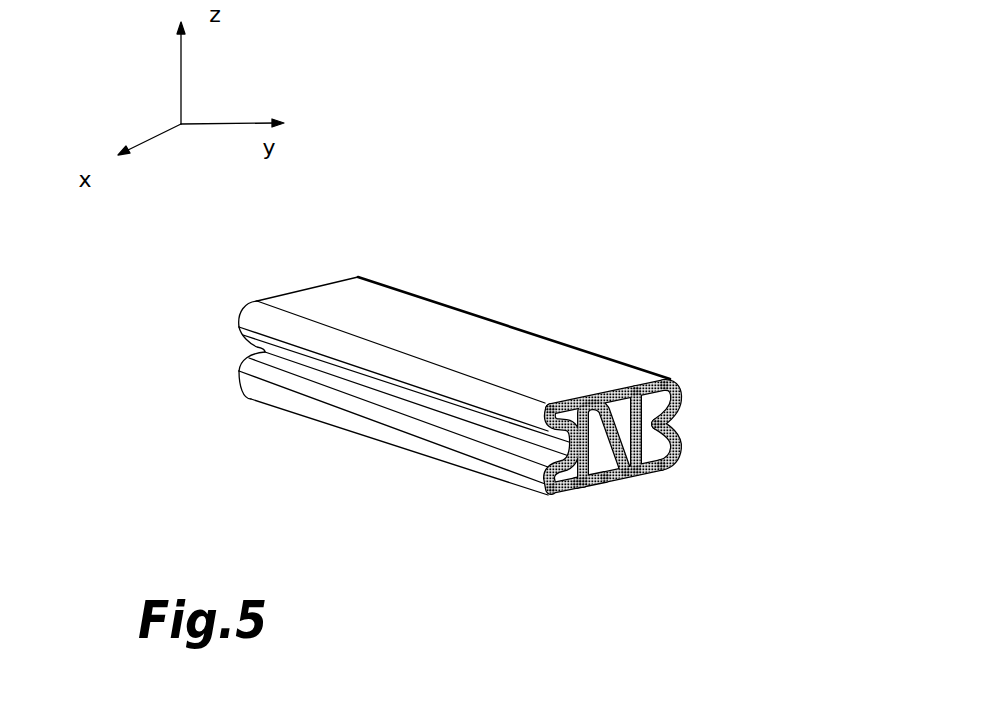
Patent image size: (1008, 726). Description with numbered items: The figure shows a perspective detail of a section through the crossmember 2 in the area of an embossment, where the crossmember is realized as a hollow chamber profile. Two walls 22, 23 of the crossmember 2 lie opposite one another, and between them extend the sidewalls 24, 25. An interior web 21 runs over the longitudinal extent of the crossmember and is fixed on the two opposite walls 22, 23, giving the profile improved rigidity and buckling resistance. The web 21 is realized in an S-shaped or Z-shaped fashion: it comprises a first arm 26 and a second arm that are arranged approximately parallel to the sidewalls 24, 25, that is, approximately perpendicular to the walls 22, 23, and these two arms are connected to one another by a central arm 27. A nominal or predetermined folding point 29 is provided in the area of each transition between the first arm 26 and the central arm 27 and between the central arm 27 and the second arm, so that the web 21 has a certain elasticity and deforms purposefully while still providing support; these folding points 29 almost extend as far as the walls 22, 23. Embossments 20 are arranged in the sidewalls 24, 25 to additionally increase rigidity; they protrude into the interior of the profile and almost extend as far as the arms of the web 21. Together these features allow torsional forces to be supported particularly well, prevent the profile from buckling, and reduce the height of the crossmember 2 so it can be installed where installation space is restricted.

The crossmember 2 is at (400, 302).
The embossment 20 is at (559, 444).
The interior web 21 is at (613, 392).
The wall 22 is at (588, 392).
The wall 23 is at (590, 486).
The sidewall 24 is at (541, 463).
The sidewall 25 is at (678, 388).
The first arm 26 is at (547, 492).
The central arm 27 is at (608, 480).
The predetermined folding point 29 is at (672, 468).